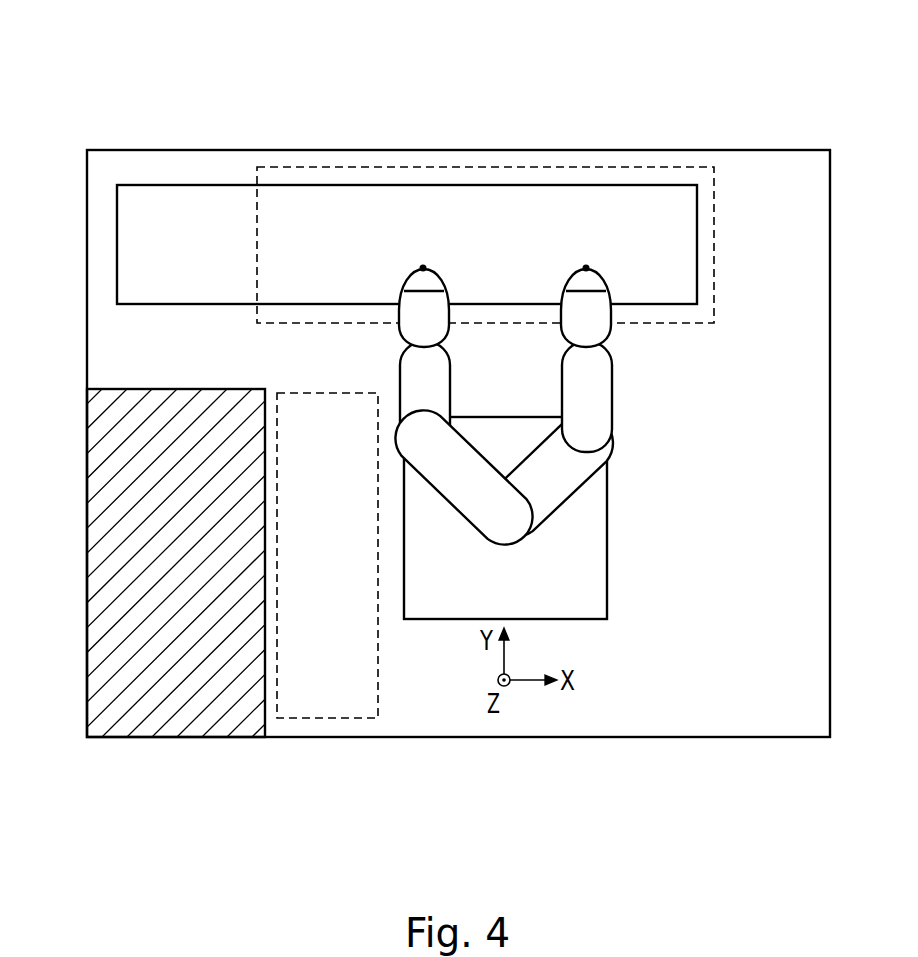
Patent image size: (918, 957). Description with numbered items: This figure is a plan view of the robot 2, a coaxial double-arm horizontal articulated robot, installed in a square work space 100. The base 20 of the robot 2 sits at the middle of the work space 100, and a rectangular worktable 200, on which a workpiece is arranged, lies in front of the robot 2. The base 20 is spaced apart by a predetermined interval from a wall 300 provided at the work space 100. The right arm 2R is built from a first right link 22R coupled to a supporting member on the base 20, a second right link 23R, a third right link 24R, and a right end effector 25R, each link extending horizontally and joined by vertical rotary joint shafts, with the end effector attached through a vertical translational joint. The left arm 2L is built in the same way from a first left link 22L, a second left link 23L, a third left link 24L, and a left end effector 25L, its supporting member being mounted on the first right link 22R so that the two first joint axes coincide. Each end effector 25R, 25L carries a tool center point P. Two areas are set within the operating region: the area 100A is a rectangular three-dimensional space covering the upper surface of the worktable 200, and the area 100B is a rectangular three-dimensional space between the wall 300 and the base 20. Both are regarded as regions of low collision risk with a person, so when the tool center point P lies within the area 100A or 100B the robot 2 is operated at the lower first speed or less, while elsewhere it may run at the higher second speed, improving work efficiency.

The work space 100 is at (755, 149).
The area 100A is at (715, 204).
The area 100B is at (330, 718).
The worktable 200 is at (697, 277).
The wall 300 is at (190, 389).
The robot 2 is at (549, 416).
The base 20 is at (608, 542).
The left arm 2L is at (463, 379).
The right arm 2R is at (602, 375).
The first left link 22L is at (489, 460).
The first right link 22R is at (613, 453).
The second left link 23L is at (450, 373).
The second right link 23R is at (612, 375).
The third left link 24L is at (448, 297).
The third right link 24R is at (611, 298).
The left end effector 25L is at (447, 279).
The right end effector 25R is at (609, 279).
The tool center point P is at (423, 268).